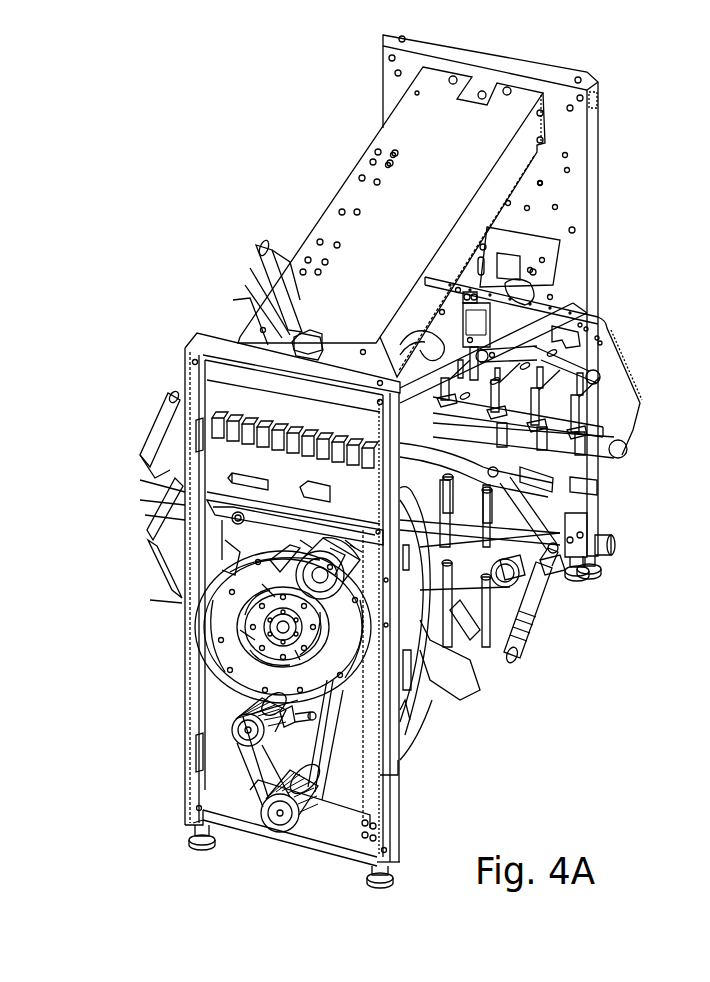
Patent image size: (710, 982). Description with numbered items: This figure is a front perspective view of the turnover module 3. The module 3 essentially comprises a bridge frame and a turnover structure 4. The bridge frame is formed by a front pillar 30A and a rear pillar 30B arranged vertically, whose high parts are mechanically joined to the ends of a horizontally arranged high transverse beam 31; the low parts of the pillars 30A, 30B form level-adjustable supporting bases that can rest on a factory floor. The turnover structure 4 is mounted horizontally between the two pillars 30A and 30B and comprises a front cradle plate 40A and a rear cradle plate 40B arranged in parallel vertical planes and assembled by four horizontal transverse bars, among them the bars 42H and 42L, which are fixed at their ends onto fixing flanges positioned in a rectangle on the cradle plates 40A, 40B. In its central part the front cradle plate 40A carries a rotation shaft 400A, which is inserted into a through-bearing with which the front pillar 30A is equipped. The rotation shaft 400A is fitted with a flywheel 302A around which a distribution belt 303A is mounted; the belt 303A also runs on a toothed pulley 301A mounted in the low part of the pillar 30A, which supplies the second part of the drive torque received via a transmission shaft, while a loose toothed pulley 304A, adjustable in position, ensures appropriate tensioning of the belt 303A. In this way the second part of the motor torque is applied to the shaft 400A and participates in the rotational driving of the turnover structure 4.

The turnover module 3 is at (293, 135).
The front pillar 30A is at (222, 350).
The rear pillar 30B is at (558, 70).
The high transverse beam 31 is at (370, 197).
The turnover structure 4 is at (653, 460).
The front cradle plate 40A is at (415, 637).
The rear cradle plate 40B is at (520, 253).
The transverse bar 42H is at (563, 279).
The transverse bar 42L is at (507, 650).
The rotation shaft 400A is at (280, 622).
The toothed pulley 301A is at (272, 816).
The flywheel 302A is at (340, 663).
The distribution belt 303A is at (327, 743).
The loose toothed pulley 304A is at (245, 703).